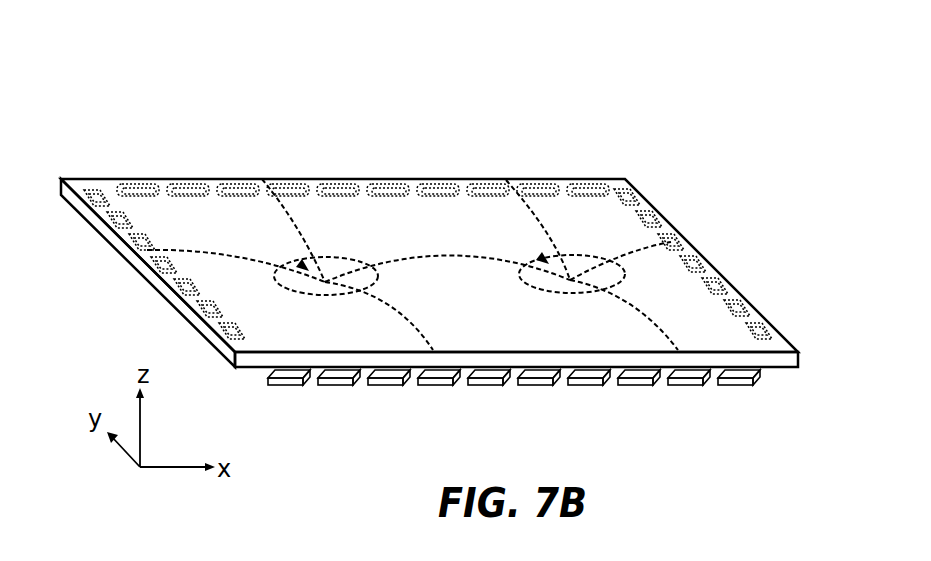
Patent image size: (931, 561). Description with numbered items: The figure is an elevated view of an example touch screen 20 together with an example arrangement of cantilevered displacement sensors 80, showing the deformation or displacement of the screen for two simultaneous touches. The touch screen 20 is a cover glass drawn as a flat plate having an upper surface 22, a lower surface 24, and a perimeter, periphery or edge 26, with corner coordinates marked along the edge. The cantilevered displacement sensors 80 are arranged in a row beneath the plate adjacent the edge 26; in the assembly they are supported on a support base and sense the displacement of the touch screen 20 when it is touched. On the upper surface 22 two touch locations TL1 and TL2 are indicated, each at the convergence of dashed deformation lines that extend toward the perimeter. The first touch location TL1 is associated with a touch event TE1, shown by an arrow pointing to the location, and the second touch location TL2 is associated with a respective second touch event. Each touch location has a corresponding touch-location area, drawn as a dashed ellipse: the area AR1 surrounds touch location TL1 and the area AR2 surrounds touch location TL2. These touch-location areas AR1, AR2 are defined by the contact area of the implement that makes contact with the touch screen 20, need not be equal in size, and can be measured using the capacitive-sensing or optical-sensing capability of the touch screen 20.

The touch screen 20 is at (223, 126).
The upper surface 22 is at (657, 212).
The lower surface 24 is at (147, 282).
The edge 26 is at (683, 237).
The cantilevered displacement sensors 80 is at (632, 385).
The touch event TE1 is at (302, 266).
The touch location TL1 is at (327, 282).
The touch location TL2 is at (571, 280).
The touch-location area AR1 is at (378, 290).
The touch-location area AR2 is at (620, 288).